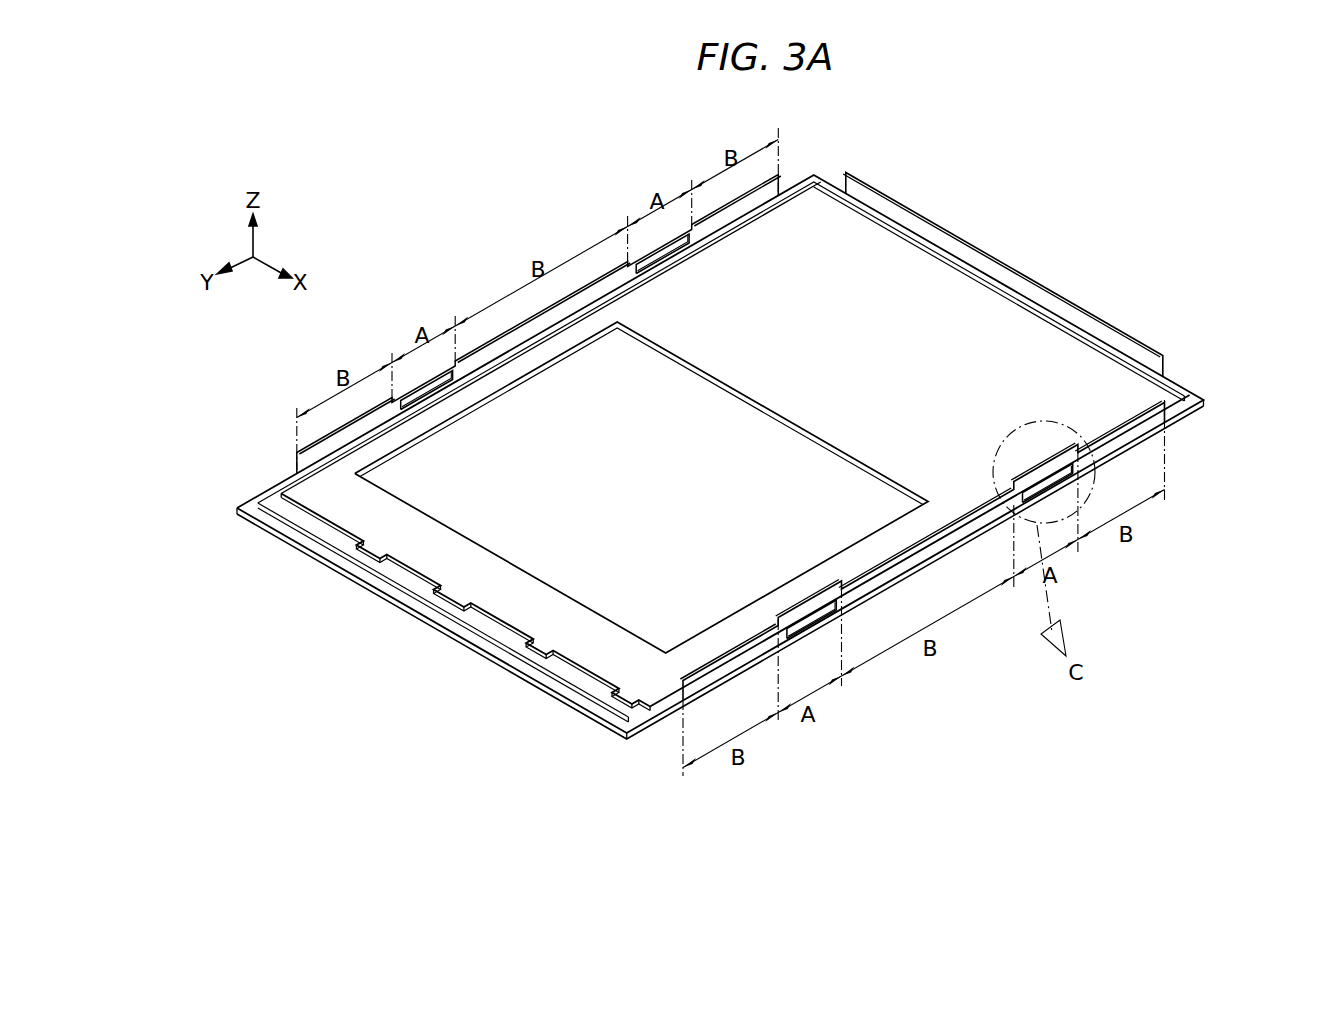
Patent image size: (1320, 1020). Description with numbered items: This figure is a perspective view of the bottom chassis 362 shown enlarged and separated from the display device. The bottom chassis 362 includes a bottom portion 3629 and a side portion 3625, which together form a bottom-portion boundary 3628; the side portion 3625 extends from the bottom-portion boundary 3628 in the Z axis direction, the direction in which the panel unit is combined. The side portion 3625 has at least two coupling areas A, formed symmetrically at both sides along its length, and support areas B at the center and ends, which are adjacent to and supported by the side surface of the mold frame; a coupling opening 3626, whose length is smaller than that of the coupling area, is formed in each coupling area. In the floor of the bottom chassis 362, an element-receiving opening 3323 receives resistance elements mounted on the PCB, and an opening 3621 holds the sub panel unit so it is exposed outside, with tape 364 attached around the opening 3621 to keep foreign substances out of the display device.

The bottom chassis 362 is at (527, 186).
The element-receiving opening 3323 is at (512, 647).
The opening 3621 is at (555, 512).
The tape 364 is at (342, 514).
The bottom portion 3629 is at (1052, 347).
The side portion 3625 is at (1138, 430).
The bottom-portion boundary 3628 is at (704, 703).
The coupling opening 3626 is at (800, 621).